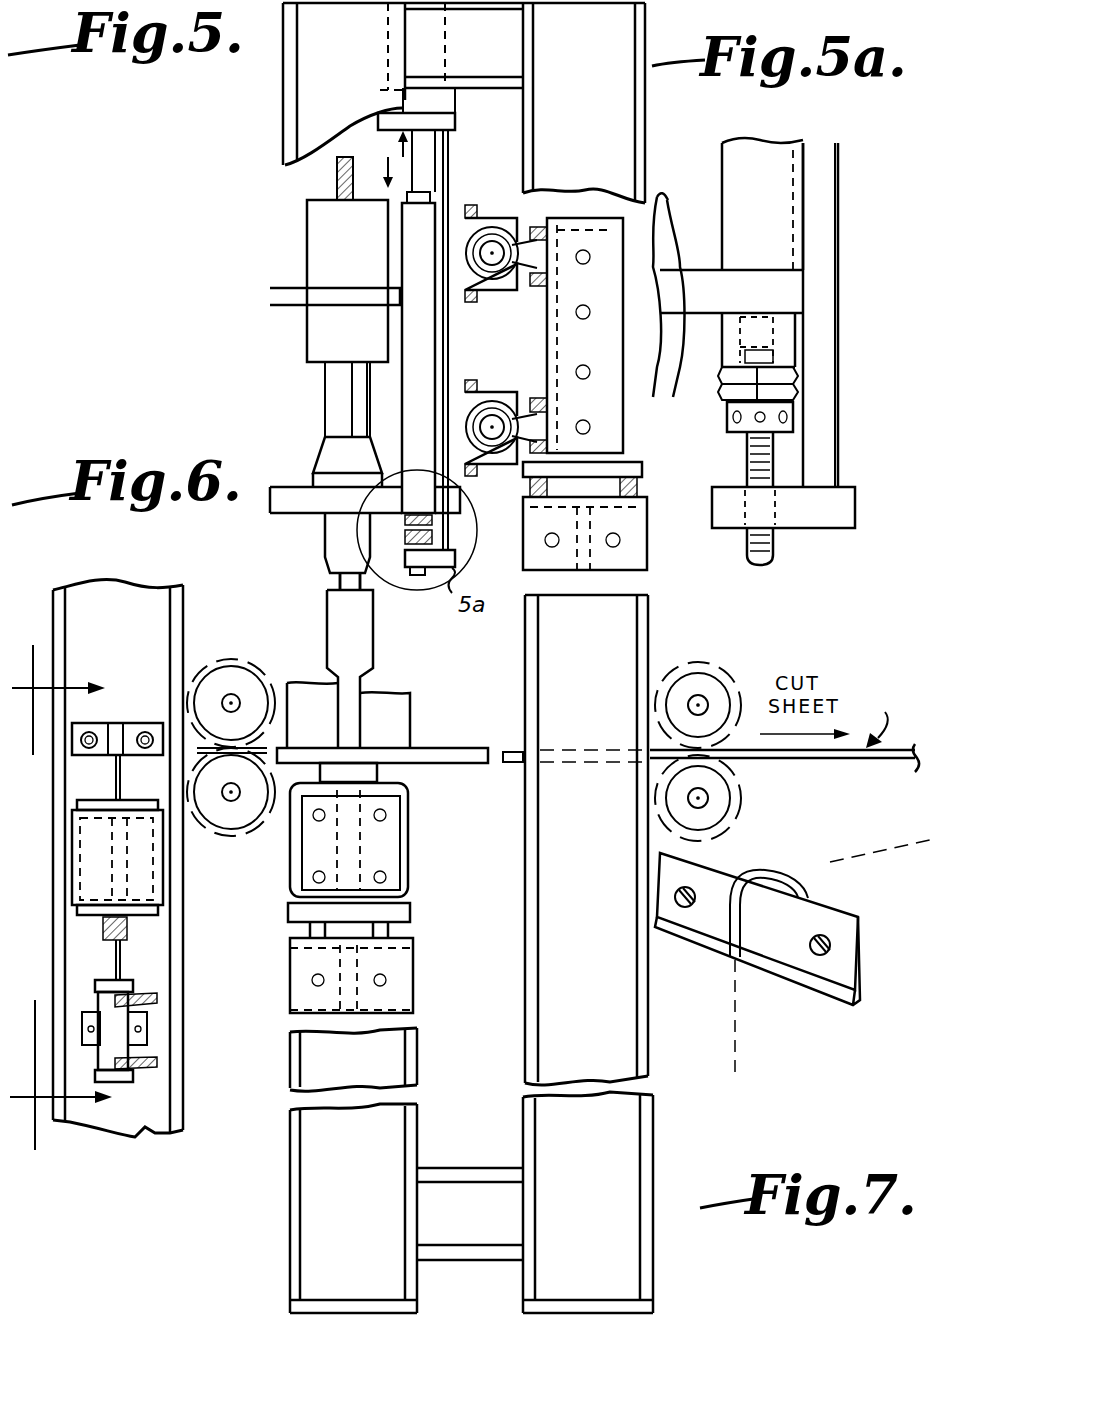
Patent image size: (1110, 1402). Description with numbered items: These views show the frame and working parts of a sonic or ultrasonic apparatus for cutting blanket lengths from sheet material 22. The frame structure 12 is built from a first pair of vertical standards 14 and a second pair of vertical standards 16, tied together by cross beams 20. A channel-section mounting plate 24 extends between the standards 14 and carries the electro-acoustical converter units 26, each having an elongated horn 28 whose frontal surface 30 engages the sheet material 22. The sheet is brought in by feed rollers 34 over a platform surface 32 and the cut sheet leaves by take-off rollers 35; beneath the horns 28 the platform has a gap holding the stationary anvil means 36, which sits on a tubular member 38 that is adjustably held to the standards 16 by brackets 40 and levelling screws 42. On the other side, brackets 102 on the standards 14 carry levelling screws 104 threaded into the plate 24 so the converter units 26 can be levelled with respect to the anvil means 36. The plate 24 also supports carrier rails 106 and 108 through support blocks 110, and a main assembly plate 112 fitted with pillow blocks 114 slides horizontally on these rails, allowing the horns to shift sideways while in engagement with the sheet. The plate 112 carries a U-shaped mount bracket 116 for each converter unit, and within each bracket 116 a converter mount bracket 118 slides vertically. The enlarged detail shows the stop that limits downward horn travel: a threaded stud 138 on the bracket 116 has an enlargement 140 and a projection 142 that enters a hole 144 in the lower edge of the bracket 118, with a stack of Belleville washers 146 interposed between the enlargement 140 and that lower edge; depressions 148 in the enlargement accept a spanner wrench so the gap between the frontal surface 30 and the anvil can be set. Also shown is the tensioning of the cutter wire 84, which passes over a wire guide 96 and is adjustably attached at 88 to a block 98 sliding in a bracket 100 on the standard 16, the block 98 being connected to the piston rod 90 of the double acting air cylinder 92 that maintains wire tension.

In FIG. 6, the frame structure 12 is at (57, 897).
In FIG. 7, the frame structure 12 is at (272, 1188).
In FIG. 5, the vertical standards 14 is at (647, 90).
In FIG. 6, the vertical standards 14 is at (650, 1035).
In FIG. 5, the vertical standards 16 is at (344, 84).
In FIG. 6, the vertical standards 16 is at (185, 602).
In FIG. 5, the cross beams 20 is at (508, 86).
In FIG. 7, the cross beams 20 is at (497, 1138).
In FIG. 6, the sheet material 22 is at (450, 748).
In FIG. 5, the mounting plate 24 is at (553, 222).
In FIG. 5, the electro-acoustical converter units 26 is at (305, 335).
In FIG. 5a, the electro-acoustical converter units 26 is at (675, 248).
In FIG. 6, the horn 28 is at (376, 650).
In FIG. 6, the frontal surface 30 is at (360, 748).
In FIG. 6, the platform surface 32 is at (485, 763).
In FIG. 6, the feed rollers 34 is at (230, 657).
In FIG. 6, the take-off rollers 35 is at (700, 668).
In FIG. 6, the anvil means 36 is at (382, 770).
In FIG. 6, the tubular member 38 is at (392, 897).
In FIG. 6, the brackets 40 is at (413, 965).
In FIG. 6, the levelling screws 42 is at (390, 930).
In FIG. 6, the cutter wire 84 is at (118, 723).
In FIG. 6, the adjustable attachment 88 is at (190, 882).
In FIG. 6, the piston rod 90 is at (121, 967).
In FIG. 6, the air cylinder 92 is at (132, 1050).
In FIG. 6, the wire guide 96 is at (140, 723).
In FIG. 6, the block 98 is at (135, 800).
In FIG. 6, the bracket 100 is at (183, 897).
In FIG. 5, the brackets 102 is at (647, 512).
In FIG. 5, the levelling screws 104 is at (645, 485).
In FIG. 5, the carrier rail 106 is at (492, 414).
In FIG. 5, the carrier rail 108 is at (492, 240).
In FIG. 5, the support blocks 110 is at (540, 298).
In FIG. 5, the main assembly plate 112 is at (450, 185).
In FIG. 5, the pillow blocks 114 is at (476, 292).
In FIG. 5, the U-shaped mount bracket 116 is at (455, 125).
In FIG. 5a, the U-shaped mount bracket 116 is at (838, 440).
In FIG. 5, the converter mount bracket 118 is at (400, 332).
In FIG. 5a, the converter mount bracket 118 is at (722, 178).
In FIG. 5a, the threaded stud 138 is at (775, 545).
In FIG. 5a, the enlargement 140 is at (727, 415).
In FIG. 5a, the projection 142 is at (755, 328).
In FIG. 5a, the hole 144 is at (740, 260).
In FIG. 5a, the Belleville washers 146 is at (797, 388).
In FIG. 5a, the depressions 148 is at (797, 398).